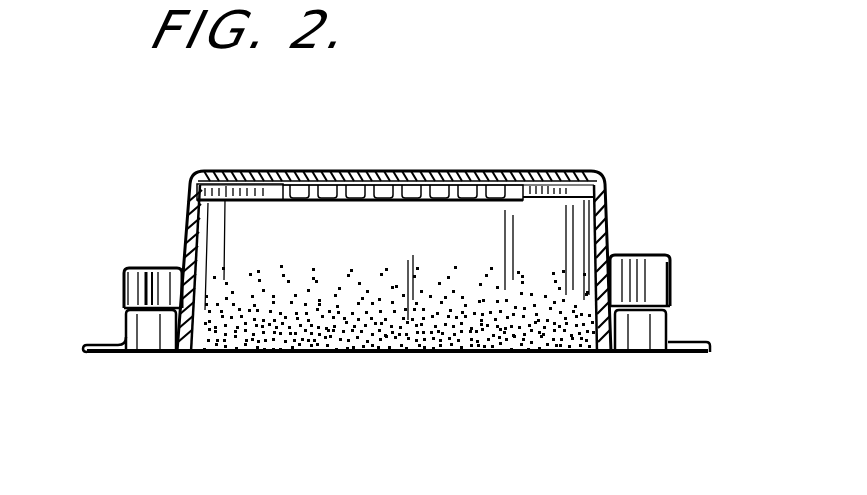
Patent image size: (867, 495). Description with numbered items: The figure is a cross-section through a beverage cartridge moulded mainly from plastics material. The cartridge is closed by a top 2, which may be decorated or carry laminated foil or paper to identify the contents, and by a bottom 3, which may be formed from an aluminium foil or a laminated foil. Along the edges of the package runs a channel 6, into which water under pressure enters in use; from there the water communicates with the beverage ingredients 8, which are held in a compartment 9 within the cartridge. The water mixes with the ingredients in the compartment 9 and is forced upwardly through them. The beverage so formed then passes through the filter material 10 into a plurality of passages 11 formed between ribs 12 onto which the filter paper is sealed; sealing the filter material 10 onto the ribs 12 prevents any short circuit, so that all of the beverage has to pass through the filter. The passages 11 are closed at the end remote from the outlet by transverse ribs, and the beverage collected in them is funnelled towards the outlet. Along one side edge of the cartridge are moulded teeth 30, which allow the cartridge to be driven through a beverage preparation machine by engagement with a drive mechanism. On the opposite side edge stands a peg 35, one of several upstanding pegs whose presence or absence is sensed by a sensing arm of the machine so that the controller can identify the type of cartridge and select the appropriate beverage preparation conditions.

The top 2 is at (437, 170).
The bottom 3 is at (472, 353).
The channel 6 is at (160, 354).
The beverage ingredients 8 is at (313, 355).
The compartment 9 is at (588, 242).
The filter material 10 is at (317, 217).
The passages 11 is at (375, 170).
The ribs 12 is at (305, 170).
The teeth 30 is at (647, 263).
The peg 35 is at (124, 288).